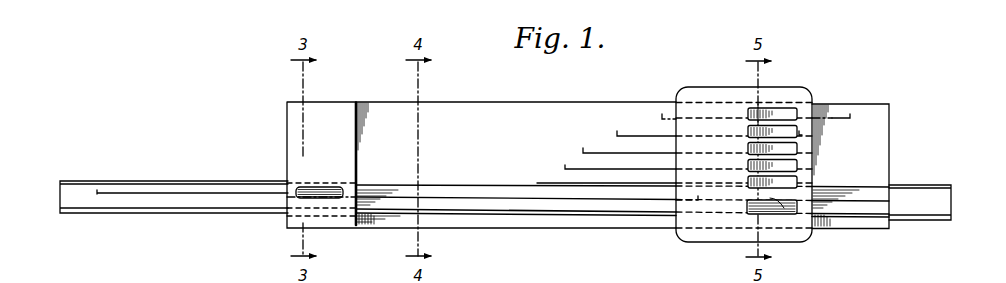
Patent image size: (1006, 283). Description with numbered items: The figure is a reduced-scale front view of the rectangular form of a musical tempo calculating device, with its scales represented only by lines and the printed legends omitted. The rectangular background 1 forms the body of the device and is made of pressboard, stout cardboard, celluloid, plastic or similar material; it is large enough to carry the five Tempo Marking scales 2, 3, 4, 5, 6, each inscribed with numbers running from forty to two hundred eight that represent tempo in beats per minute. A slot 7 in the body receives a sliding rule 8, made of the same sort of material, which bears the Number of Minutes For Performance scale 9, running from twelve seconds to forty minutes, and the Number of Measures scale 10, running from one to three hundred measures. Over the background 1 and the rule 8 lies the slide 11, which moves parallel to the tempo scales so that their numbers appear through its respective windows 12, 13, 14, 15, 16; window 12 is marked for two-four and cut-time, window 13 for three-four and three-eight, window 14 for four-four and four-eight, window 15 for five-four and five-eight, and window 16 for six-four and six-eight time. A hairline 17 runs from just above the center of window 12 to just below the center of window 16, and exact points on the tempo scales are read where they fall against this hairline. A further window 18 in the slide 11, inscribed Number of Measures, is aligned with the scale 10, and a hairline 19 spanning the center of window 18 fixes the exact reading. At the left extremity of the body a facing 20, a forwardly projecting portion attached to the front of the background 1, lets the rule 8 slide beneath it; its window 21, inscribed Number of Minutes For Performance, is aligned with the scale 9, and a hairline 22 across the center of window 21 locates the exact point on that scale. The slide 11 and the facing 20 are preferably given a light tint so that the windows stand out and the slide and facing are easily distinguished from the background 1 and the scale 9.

The rectangular background 1 is at (540, 108).
The Tempo Marking scale 2 is at (658, 118).
The Tempo Marking scale 3 is at (614, 136).
The Tempo Marking scale 4 is at (580, 151).
The Tempo Marking scale 5 is at (562, 167).
The Tempo Marking scale 6 is at (536, 182).
The slot 7 is at (393, 184).
The sliding rule 8 is at (166, 185).
The Number of Minutes For Performance scale 9 is at (122, 199).
The Number of Measures scale 10 is at (275, 207).
The slide 11 is at (705, 93).
The window 12 is at (748, 114).
The window 13 is at (748, 132).
The window 14 is at (748, 148).
The window 15 is at (748, 166).
The window 16 is at (748, 182).
The hairline 17 is at (771, 124).
The window 18 is at (747, 207).
The hairline 19 is at (770, 198).
The facing 20 is at (341, 107).
The window 21 is at (292, 187).
The hairline 22 is at (320, 203).